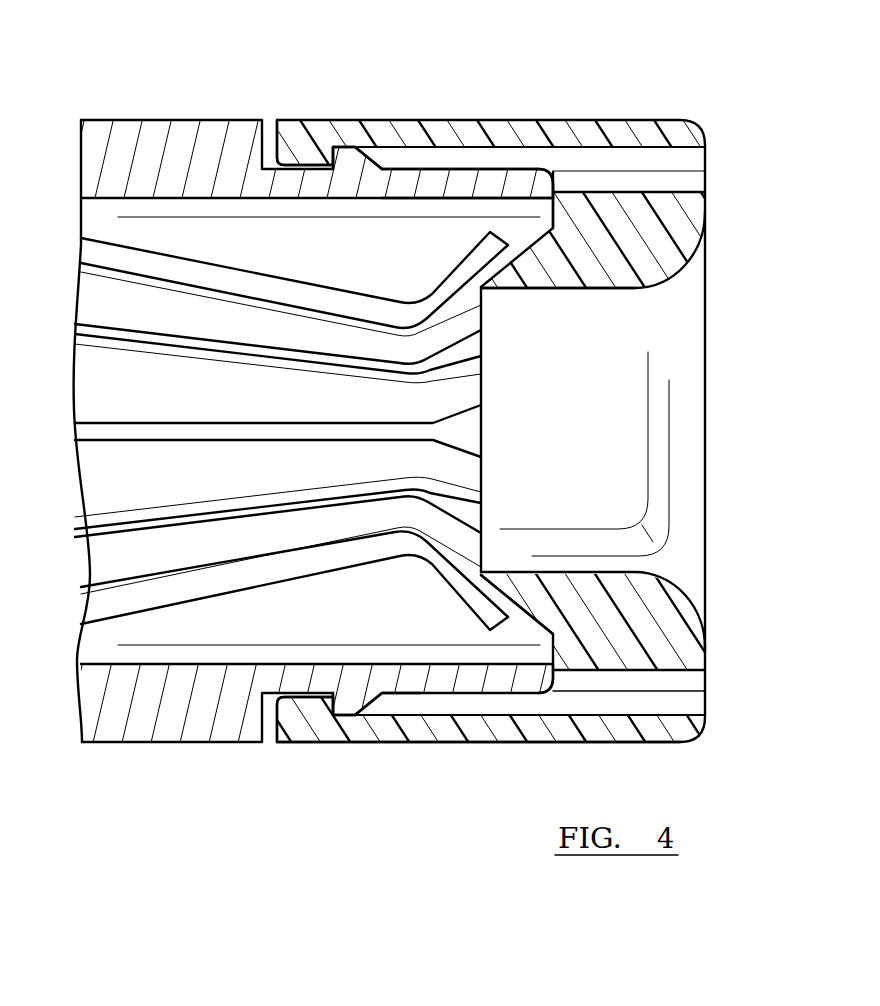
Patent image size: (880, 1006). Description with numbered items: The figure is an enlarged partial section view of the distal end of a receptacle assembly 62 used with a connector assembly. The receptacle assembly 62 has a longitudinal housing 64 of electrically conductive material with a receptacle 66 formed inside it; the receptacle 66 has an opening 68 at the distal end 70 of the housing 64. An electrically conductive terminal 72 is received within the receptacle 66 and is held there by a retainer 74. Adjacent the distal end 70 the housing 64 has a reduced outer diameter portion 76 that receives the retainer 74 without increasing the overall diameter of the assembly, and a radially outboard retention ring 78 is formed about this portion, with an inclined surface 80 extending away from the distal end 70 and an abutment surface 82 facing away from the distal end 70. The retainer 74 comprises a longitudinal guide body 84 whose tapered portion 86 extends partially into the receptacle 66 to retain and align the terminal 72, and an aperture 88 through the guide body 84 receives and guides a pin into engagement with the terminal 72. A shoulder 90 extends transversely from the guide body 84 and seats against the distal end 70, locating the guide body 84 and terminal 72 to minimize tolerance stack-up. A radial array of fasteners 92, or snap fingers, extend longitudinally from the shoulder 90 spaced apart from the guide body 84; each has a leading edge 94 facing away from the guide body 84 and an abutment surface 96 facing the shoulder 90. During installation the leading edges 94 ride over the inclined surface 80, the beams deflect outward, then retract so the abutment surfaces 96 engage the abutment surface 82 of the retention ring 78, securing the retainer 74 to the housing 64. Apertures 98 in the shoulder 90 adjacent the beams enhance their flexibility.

The receptacle assembly 62 is at (628, 78).
The longitudinal housing 64 is at (155, 118).
The receptacle 66 is at (413, 198).
The opening 68 is at (538, 206).
The distal end 70 is at (555, 183).
The electrically conductive terminal 72 is at (157, 248).
The retainer 74 is at (672, 111).
The reduced outer diameter portion 76 is at (498, 168).
The retention ring 78 is at (343, 146).
The inclined surface 80 is at (378, 160).
The abutment surface 82 is at (325, 155).
The longitudinal guide body 84 is at (653, 228).
The tapered portion 86 is at (538, 620).
The aperture 88 is at (605, 290).
The shoulder 90 is at (552, 650).
The fasteners 92 is at (600, 742).
The leading edge 94 is at (287, 694).
The abutment surface 96 is at (365, 742).
The apertures 98 is at (656, 692).